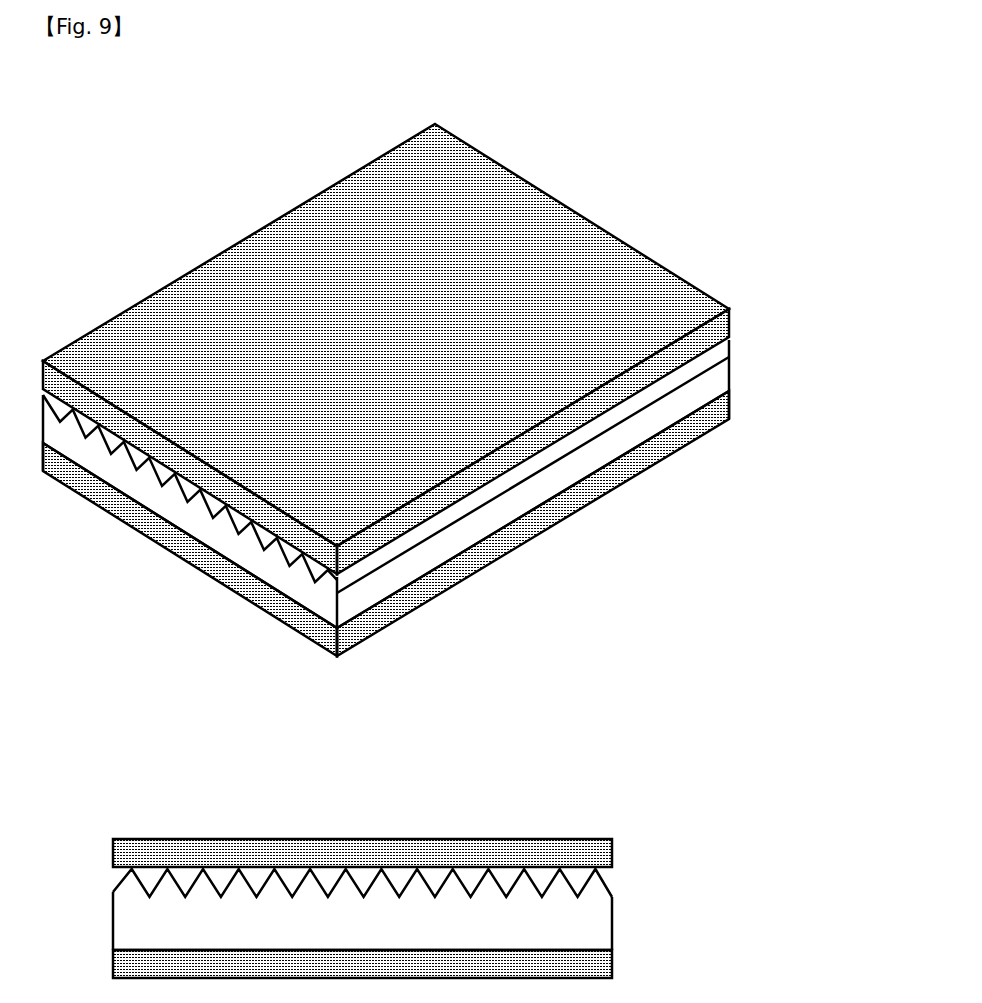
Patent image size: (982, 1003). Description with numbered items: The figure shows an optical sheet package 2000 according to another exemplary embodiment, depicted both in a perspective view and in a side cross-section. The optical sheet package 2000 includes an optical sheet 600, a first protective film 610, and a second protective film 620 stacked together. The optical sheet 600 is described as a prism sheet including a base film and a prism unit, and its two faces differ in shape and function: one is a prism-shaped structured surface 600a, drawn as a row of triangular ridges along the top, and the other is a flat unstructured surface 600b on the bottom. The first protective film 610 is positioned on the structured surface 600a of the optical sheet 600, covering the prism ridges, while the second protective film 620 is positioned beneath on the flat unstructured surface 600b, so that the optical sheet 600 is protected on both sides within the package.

The optical sheet package 2000 is at (433, 519).
The first protective film 610 is at (732, 319).
The optical sheet 600 is at (433, 645).
The structured surface 600a is at (175, 475).
The unstructured surface 600b is at (187, 542).
The second protective film 620 is at (732, 408).